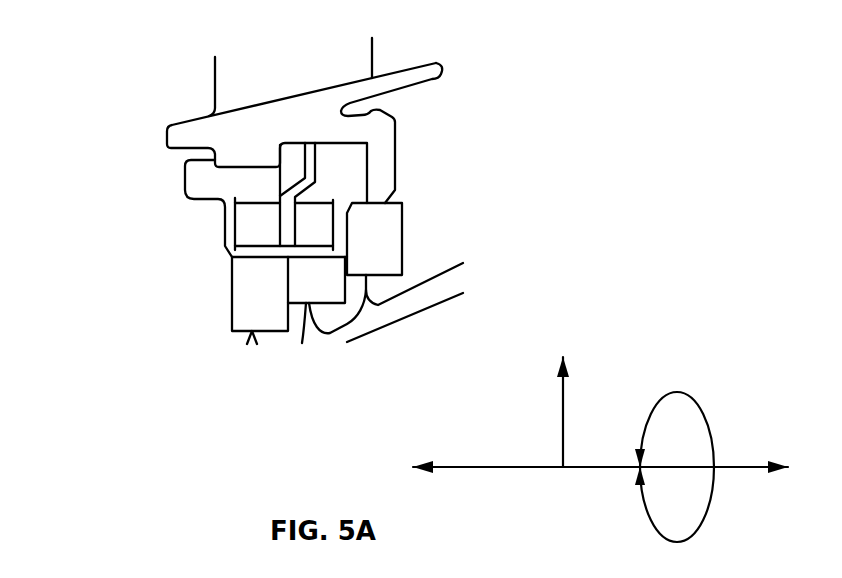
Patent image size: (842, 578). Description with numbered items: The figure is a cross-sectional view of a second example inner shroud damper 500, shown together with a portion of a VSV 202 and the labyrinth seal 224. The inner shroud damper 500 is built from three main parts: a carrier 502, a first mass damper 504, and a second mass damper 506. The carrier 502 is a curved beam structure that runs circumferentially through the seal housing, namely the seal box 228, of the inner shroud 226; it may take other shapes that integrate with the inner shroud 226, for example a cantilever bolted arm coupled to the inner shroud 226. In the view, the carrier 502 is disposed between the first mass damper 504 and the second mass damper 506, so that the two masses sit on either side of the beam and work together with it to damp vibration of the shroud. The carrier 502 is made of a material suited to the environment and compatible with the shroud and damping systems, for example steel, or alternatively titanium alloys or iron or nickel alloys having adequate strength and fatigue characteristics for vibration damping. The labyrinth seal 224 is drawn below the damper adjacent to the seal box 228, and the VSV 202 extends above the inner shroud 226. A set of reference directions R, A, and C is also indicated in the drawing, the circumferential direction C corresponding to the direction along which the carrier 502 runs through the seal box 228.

The inner shroud damper 500 is at (140, 170).
The VSV 202 is at (312, 80).
The inner shroud 226 is at (420, 63).
The seal box 228 is at (395, 157).
The carrier 502 is at (315, 158).
The first mass damper 504 is at (237, 212).
The second mass damper 506 is at (345, 214).
The labyrinth seal 224 is at (408, 315).
The radial direction R is at (563, 435).
The axial direction A is at (527, 467).
The circumferential direction C is at (713, 453).